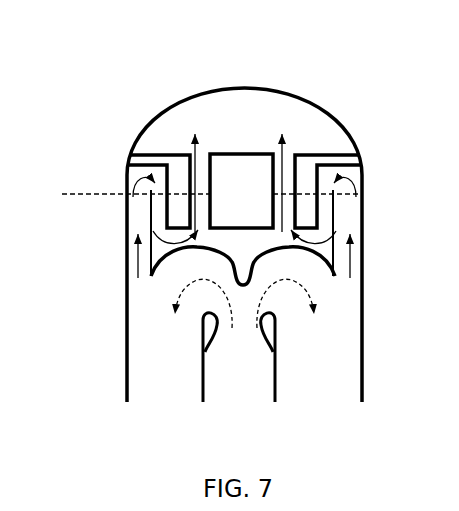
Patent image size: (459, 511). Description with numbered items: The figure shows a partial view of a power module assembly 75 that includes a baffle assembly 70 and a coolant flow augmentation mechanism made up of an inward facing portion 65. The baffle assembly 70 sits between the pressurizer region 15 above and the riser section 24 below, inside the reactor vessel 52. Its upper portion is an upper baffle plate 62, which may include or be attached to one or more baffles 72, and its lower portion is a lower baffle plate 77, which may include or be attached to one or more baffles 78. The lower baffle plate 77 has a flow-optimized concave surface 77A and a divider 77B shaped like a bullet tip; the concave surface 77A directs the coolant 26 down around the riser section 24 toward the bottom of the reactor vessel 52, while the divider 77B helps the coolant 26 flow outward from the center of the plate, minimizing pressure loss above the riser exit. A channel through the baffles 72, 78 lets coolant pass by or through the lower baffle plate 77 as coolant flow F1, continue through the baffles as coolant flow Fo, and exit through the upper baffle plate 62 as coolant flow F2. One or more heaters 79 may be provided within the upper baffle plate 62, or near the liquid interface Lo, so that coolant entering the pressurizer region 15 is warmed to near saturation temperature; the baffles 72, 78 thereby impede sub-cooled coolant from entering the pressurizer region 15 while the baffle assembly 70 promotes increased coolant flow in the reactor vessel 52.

The baffle assembly 70 is at (102, 148).
The power module assembly 75 is at (202, 72).
The reactor vessel 52 is at (337, 105).
The pressurizer region 15 is at (238, 106).
The heater 79 is at (203, 140).
The upper baffle plate 62 is at (172, 152).
The baffle 72 is at (300, 168).
The baffle 78 is at (342, 222).
The lower baffle plate 77 is at (94, 241).
The concave surface 77A is at (293, 253).
The divider 77B is at (220, 263).
The coolant 26 is at (188, 325).
The inward facing portion 65 is at (278, 320).
The riser section 24 is at (278, 360).
The coolant flow F1 is at (354, 252).
The coolant flow F2 is at (274, 146).
The coolant flow Fo is at (350, 185).
The liquid interface Lo is at (196, 201).